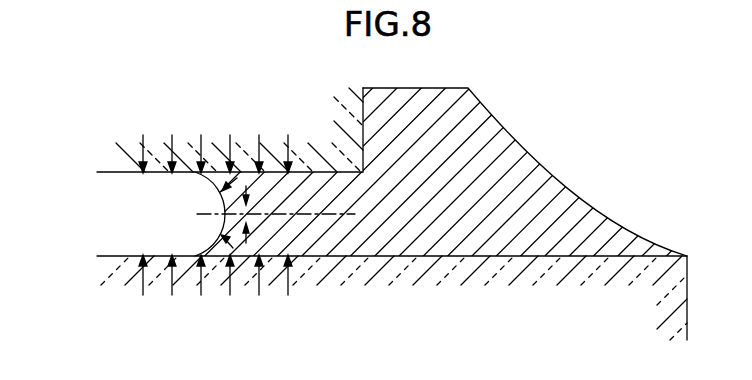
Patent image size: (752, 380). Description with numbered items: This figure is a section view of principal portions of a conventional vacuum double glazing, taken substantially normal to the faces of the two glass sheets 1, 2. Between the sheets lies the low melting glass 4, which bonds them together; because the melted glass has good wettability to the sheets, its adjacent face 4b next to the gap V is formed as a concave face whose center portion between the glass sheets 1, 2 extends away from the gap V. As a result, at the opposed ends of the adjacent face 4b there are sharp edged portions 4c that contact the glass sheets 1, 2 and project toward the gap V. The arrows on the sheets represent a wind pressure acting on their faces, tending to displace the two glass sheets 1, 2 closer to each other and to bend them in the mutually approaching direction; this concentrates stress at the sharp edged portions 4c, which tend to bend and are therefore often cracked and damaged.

The glass sheet 1 is at (322, 110).
The glass sheet 2 is at (312, 318).
The low melting glass 4 is at (543, 178).
The adjacent face 4b is at (221, 199).
The sharp edged portions 4c is at (210, 180).
The gap V is at (99, 244).